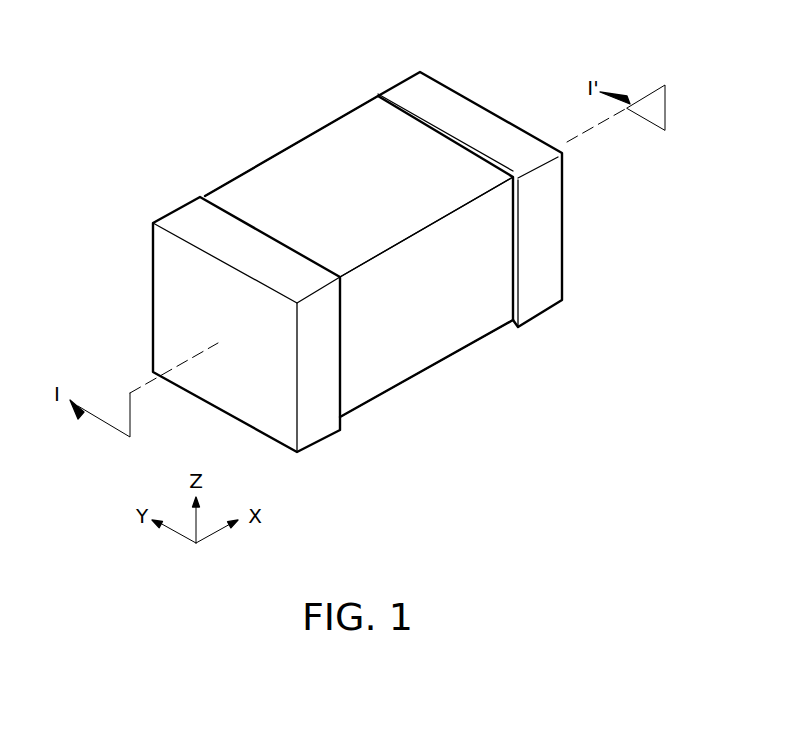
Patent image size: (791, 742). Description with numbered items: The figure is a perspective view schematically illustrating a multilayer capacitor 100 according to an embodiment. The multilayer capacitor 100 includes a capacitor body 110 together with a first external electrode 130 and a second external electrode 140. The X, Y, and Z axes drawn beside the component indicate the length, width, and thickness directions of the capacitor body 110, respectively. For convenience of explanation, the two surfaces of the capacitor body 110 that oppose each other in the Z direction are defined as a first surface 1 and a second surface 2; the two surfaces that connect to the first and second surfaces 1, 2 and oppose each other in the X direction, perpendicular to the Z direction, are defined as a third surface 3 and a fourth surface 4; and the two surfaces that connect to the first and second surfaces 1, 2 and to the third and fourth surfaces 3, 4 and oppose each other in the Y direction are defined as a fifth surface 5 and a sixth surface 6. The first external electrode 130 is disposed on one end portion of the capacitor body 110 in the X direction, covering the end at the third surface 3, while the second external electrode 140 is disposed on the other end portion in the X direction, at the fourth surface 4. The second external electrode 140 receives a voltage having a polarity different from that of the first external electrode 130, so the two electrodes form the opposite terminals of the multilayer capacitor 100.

The multilayer capacitor 100 is at (167, 50).
The capacitor body 110 is at (433, 155).
The first external electrode 130 is at (162, 287).
The second external electrode 140 is at (553, 255).
The first surface 1 is at (358, 370).
The second surface 2 is at (365, 137).
The third surface 3 is at (162, 340).
The fourth surface 4 is at (556, 205).
The fifth surface 5 is at (428, 340).
The sixth surface 6 is at (302, 171).